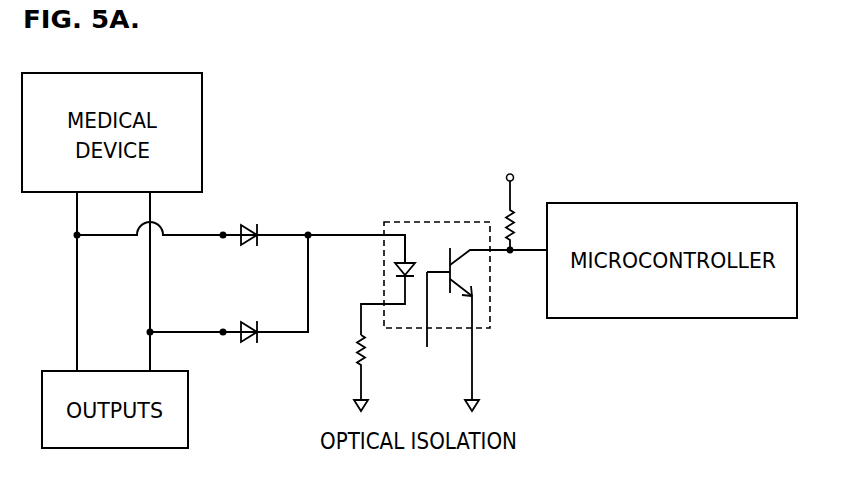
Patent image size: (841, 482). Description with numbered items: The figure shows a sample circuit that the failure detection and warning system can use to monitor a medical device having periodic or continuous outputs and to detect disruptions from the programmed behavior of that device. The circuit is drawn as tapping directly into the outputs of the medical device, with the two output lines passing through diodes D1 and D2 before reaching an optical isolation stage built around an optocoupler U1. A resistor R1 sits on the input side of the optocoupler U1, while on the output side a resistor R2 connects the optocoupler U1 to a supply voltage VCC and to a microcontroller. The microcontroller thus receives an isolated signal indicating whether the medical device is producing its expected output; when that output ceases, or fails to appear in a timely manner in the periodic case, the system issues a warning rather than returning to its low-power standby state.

The diode D1 is at (249, 221).
The diode D2 is at (249, 319).
The optocoupler A4N25 U1 is at (454, 303).
The resistor R1 is at (373, 373).
The pull-up resistor R2 is at (489, 217).
The supply voltage VCC is at (491, 166).